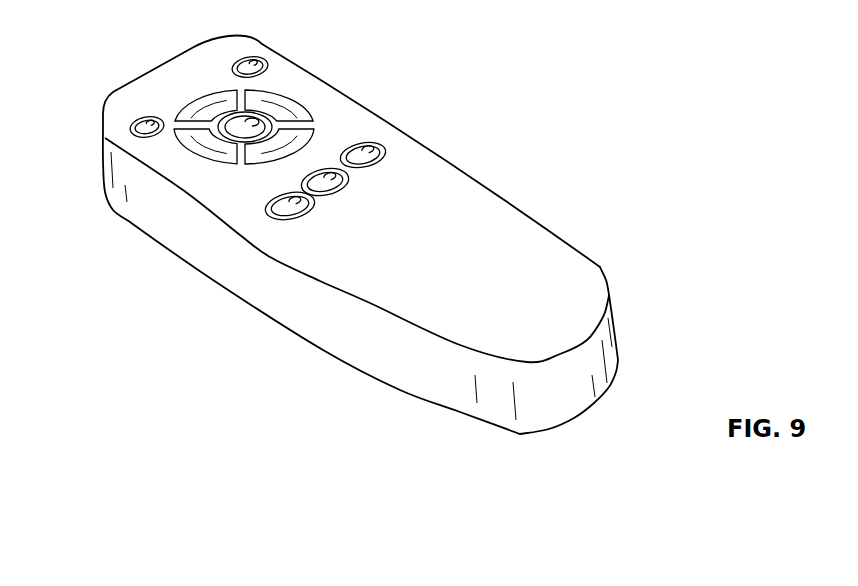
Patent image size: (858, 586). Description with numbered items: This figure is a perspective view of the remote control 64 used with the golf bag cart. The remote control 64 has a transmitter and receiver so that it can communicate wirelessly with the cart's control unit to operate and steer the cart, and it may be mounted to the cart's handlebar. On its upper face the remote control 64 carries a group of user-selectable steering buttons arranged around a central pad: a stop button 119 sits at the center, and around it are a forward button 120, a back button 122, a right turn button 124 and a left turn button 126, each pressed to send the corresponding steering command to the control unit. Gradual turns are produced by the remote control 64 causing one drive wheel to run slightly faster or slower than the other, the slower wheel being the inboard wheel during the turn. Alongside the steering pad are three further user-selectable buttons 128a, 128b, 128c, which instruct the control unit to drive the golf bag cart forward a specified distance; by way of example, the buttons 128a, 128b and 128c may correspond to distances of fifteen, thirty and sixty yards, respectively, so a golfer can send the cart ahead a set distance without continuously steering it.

The remote control 64 is at (520, 138).
The stop button 119 is at (258, 120).
The forward button 120 is at (192, 108).
The back button 122 is at (300, 146).
The right turn button 124 is at (288, 110).
The left turn button 126 is at (213, 148).
The button 128a is at (300, 210).
The button 128b is at (347, 188).
The button 128c is at (387, 160).